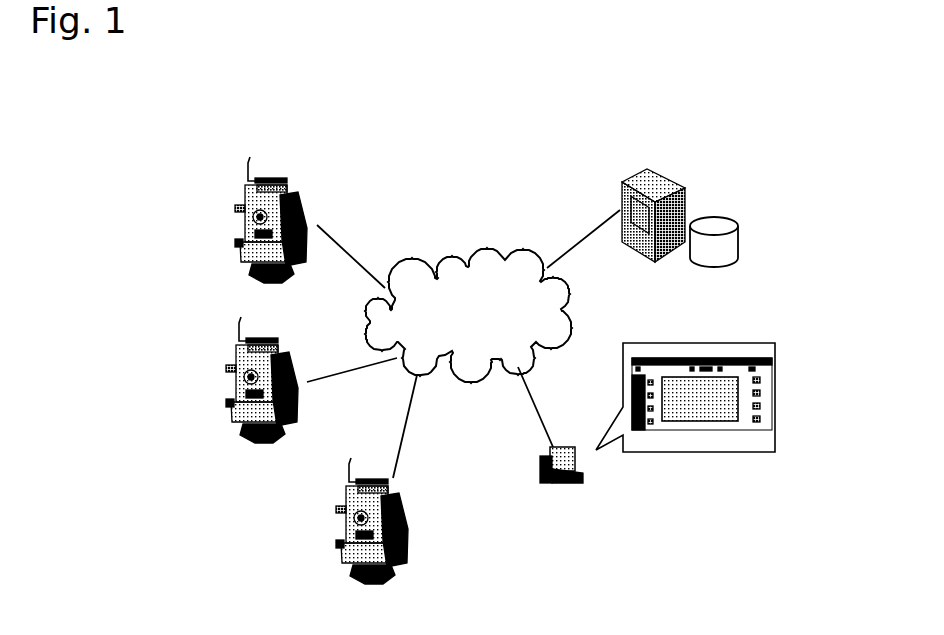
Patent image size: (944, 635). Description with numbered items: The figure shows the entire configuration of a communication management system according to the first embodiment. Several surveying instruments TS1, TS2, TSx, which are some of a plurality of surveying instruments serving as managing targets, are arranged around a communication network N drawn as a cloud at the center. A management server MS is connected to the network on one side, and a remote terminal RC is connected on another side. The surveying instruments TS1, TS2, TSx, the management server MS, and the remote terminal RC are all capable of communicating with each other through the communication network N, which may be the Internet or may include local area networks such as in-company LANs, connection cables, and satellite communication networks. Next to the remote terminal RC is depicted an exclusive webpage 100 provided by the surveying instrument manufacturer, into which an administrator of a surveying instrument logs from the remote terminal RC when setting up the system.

The surveying instrument TS1 is at (240, 211).
The surveying instrument TS2 is at (230, 373).
The surveying instrument TSx is at (340, 519).
The communication network N is at (443, 252).
The management server MS is at (669, 178).
The remote terminal RC is at (580, 479).
The exclusive webpage 100 is at (769, 375).